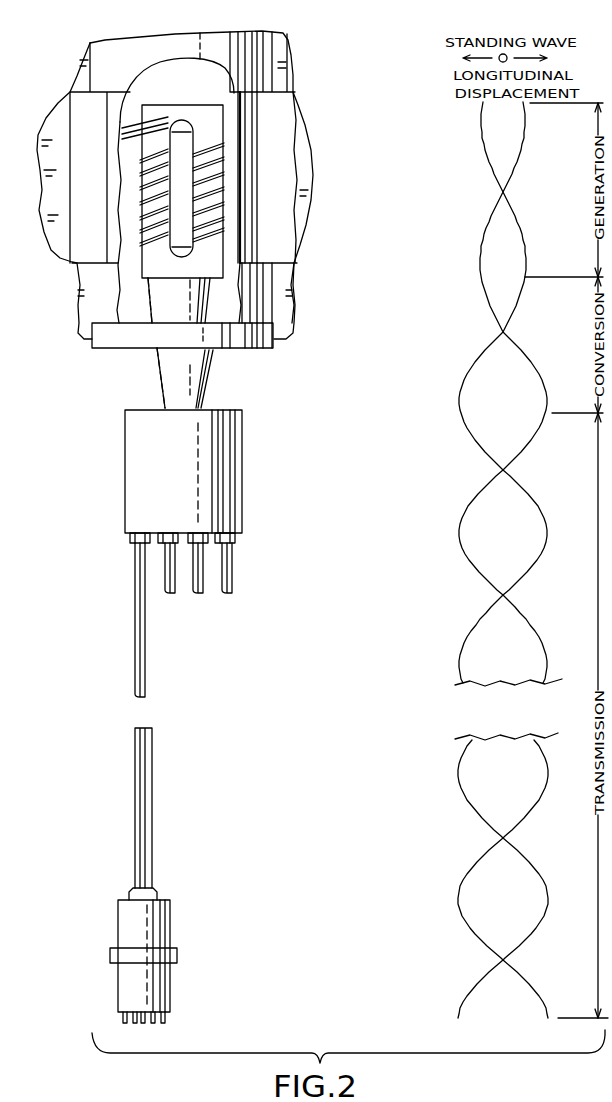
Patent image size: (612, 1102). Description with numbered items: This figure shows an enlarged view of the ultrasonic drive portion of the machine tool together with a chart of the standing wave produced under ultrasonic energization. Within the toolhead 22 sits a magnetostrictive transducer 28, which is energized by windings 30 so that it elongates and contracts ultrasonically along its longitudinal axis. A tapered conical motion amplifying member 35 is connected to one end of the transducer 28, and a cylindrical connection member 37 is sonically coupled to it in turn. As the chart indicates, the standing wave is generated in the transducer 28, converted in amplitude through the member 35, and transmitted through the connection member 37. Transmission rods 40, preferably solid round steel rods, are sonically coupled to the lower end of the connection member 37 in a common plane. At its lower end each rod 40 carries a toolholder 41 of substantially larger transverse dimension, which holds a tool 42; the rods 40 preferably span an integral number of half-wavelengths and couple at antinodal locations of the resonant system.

The toolhead 22 is at (285, 63).
The transducer 28 is at (213, 248).
The windings 30 is at (218, 165).
The motion amplifying member 35 is at (202, 370).
The connection member 37 is at (233, 452).
The transmission rods 40 is at (168, 562).
The toolholder 41 is at (157, 922).
The tool 42 is at (180, 1015).